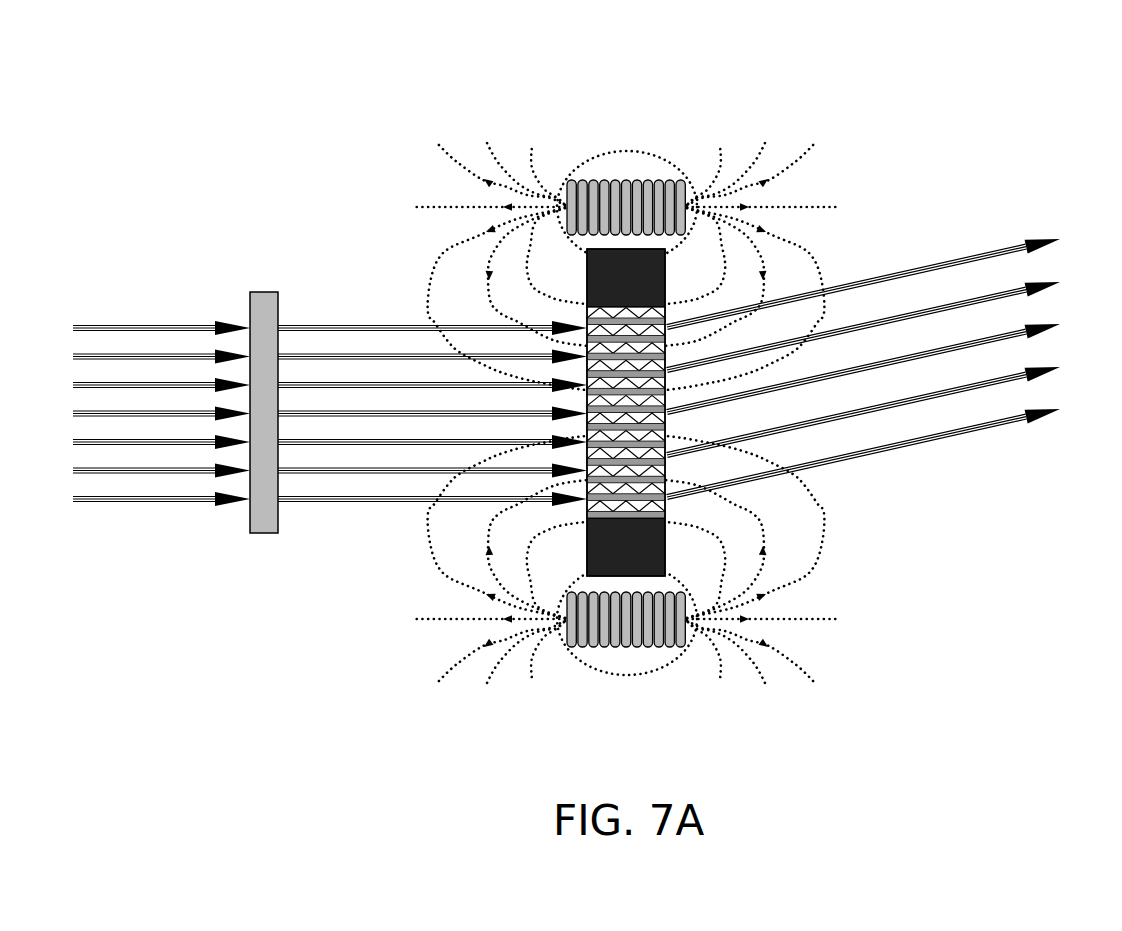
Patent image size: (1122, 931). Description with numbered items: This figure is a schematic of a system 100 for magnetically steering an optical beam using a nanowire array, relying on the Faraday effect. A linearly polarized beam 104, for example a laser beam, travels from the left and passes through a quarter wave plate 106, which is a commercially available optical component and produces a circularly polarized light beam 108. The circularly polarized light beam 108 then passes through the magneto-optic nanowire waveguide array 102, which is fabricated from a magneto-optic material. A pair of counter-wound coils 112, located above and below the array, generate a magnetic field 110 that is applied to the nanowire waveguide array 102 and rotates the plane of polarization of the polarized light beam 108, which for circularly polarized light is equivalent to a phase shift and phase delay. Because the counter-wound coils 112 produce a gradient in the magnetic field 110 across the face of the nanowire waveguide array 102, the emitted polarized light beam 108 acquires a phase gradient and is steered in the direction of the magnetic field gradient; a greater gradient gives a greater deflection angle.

The optical isolator system 100 is at (123, 106).
The magneto-optic nanowire waveguide array 102 is at (627, 302).
The linearly polarized beam 104 is at (138, 303).
The quarter wave plate 106 is at (267, 537).
The circularly polarized light beam 108 is at (371, 303).
The magnetic field 110 is at (822, 275).
The counter-wound coils 112 is at (625, 178).